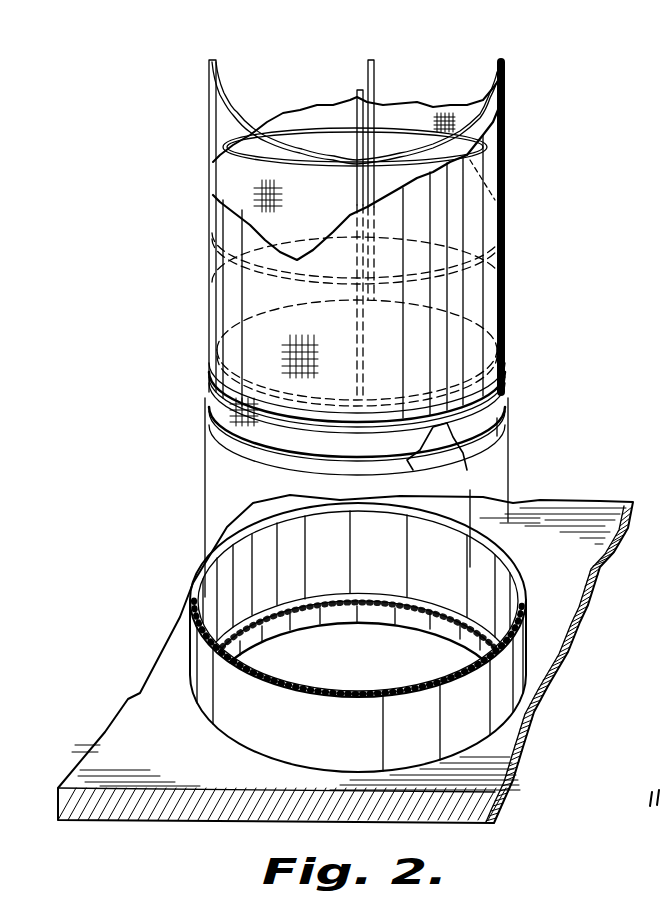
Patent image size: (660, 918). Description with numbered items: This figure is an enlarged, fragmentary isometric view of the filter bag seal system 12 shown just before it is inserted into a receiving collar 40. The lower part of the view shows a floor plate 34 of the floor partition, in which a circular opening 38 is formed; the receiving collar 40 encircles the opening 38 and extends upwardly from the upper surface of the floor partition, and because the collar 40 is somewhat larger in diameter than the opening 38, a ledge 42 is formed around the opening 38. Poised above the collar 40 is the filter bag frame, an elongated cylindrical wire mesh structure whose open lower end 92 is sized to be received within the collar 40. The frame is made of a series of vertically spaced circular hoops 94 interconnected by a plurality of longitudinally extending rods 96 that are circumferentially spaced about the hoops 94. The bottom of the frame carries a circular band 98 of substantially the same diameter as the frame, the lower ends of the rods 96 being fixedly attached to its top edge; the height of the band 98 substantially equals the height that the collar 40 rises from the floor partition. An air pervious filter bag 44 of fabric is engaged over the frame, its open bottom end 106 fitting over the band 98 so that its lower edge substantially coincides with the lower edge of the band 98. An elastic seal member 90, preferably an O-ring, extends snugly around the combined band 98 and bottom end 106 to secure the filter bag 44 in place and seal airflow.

The filter bag seal system 12 is at (548, 373).
The floor plate 34 is at (530, 749).
The circular opening 38 is at (364, 684).
The receiving collar 40 is at (358, 751).
The ledge 42 is at (225, 638).
The filter bag 44 is at (427, 113).
The elastic seal member 90 is at (213, 394).
The open lower end 92 is at (183, 266).
The circular hoop 94 is at (228, 110).
The longitudinally extending rod 96 is at (358, 90).
The circular band 98 is at (447, 455).
The open bottom end 106 is at (497, 427).